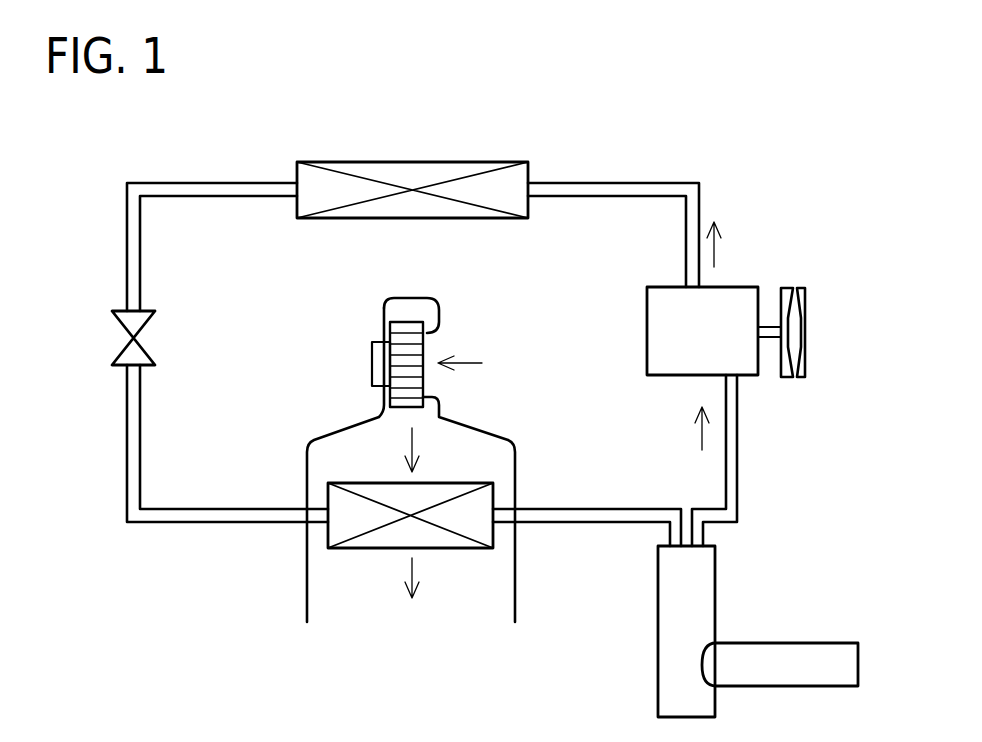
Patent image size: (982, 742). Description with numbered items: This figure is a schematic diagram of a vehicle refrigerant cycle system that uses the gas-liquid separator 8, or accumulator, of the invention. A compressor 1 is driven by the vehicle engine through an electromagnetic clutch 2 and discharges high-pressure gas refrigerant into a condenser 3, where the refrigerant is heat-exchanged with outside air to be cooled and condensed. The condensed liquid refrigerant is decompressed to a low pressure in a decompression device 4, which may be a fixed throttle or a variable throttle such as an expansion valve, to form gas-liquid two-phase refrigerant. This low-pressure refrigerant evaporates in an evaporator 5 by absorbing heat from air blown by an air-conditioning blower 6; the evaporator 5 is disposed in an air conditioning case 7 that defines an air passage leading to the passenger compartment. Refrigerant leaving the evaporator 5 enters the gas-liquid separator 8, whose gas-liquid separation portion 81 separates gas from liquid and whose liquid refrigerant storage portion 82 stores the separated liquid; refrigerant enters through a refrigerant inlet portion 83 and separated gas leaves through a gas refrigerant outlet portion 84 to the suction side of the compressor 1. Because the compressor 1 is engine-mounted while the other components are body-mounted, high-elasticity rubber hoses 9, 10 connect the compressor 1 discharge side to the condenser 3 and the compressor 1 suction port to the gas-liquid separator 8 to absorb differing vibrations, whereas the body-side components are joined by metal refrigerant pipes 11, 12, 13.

The compressor 1 is at (737, 288).
The electromagnetic clutch 2 is at (801, 297).
The condenser 3 is at (445, 160).
The decompression device 4 is at (142, 310).
The evaporator 5 is at (362, 549).
The air-conditioning blower 6 is at (413, 347).
The air conditioning case 7 is at (515, 588).
The gas-liquid separator 8 is at (724, 624).
The rubber hose 9 is at (625, 188).
The rubber hose 10 is at (737, 450).
The refrigerant pipe 11 is at (192, 190).
The refrigerant pipe 12 is at (235, 517).
The refrigerant pipe 13 is at (583, 513).
The gas-liquid separation portion 81 is at (675, 627).
The liquid refrigerant storage portion 82 is at (763, 678).
The refrigerant inlet portion 83 is at (675, 531).
The gas refrigerant outlet portion 84 is at (703, 535).